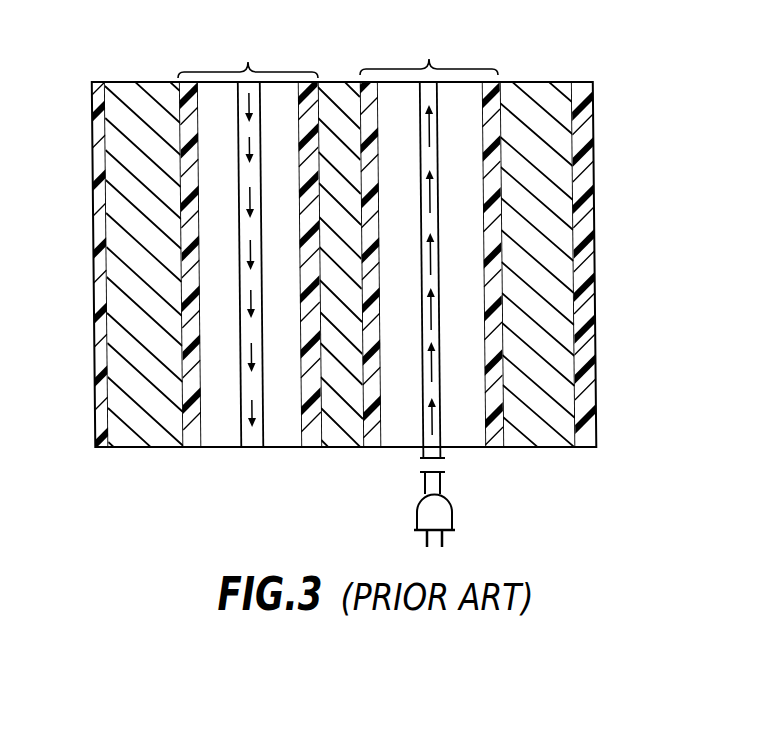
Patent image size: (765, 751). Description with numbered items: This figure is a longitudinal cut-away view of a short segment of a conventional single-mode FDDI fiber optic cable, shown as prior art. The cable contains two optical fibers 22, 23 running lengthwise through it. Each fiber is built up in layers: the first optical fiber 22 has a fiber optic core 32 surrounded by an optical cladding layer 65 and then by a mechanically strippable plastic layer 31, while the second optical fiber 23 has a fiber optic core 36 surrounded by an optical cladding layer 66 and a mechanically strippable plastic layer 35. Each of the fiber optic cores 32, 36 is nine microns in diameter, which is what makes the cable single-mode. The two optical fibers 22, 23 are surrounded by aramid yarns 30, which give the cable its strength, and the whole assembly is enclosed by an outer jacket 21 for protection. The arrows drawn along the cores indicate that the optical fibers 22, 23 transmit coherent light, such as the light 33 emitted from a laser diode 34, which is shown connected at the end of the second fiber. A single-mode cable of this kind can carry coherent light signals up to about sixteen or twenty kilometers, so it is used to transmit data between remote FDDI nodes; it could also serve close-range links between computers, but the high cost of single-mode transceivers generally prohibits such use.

The outer jacket 21 is at (600, 232).
The optical fiber 22 is at (442, 261).
The optical fiber 23 is at (248, 265).
The aramid yarns 30 is at (329, 98).
The mechanically strippable plastic layer 31 is at (492, 118).
The fiber optic core 32 is at (423, 423).
The light 33 is at (495, 362).
The laser diode 34 is at (442, 509).
The mechanically strippable plastic layer 35 is at (303, 407).
The fiber optic core 36 is at (243, 416).
The optical cladding layer 65 is at (205, 127).
The optical cladding layer 66 is at (465, 427).